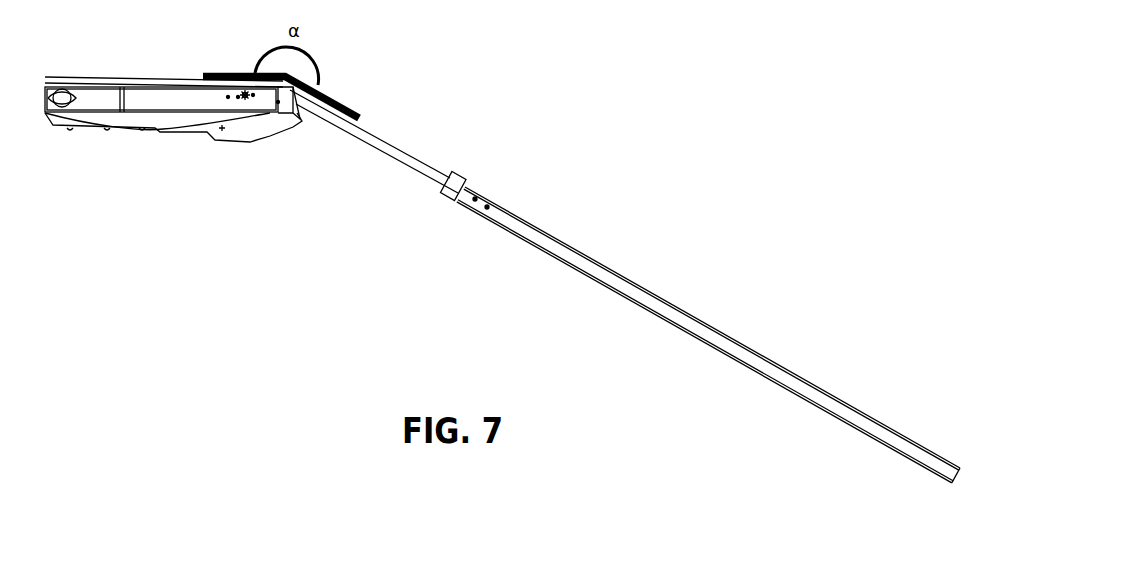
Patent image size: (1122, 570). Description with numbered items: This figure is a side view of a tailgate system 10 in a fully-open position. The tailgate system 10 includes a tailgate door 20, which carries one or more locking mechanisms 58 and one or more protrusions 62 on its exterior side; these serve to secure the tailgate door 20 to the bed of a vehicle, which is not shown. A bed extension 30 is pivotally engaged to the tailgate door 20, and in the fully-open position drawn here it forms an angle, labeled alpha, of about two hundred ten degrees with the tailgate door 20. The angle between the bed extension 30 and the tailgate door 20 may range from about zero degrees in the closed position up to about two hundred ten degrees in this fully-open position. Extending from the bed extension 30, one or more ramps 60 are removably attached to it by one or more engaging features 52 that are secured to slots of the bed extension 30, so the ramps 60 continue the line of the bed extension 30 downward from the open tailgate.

The tailgate system 10 is at (633, 115).
The tailgate door 20 is at (173, 100).
The bed extension 30 is at (380, 147).
The engaging feature 52 is at (461, 175).
The locking mechanism 58 is at (250, 100).
The ramp 60 is at (730, 343).
The protrusion 62 is at (63, 100).